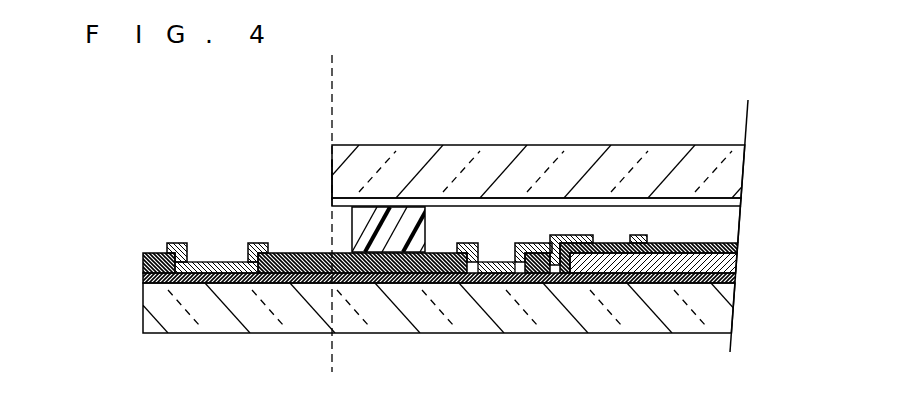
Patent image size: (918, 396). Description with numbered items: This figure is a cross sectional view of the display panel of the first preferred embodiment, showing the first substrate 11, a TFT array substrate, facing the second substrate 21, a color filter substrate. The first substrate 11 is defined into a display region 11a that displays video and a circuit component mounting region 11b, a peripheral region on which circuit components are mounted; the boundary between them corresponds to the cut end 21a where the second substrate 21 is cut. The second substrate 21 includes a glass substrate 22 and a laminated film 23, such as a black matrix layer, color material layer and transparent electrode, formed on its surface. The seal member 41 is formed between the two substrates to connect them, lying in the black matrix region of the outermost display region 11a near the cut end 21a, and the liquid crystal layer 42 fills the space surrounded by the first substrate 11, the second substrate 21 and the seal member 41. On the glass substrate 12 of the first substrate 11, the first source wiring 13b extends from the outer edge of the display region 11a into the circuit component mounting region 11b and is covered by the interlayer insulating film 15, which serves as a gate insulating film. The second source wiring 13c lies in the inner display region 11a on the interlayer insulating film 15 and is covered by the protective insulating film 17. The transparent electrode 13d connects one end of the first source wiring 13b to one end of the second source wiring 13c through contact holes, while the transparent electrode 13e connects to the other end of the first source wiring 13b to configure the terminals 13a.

The first substrate 11 is at (443, 279).
The display region 11a is at (332, 137).
The circuit component mounting region 11b is at (143, 137).
The glass substrate 12 is at (735, 316).
The terminals 13a is at (175, 246).
The first source wiring 13b is at (143, 278).
The second source wiring 13c is at (745, 263).
The transparent electrode 13d is at (647, 237).
The transparent electrode 13e is at (167, 244).
The interlayer insulating film 15 is at (745, 280).
The protective insulating film 17 is at (745, 247).
The second substrate 21 is at (577, 175).
The cut end 21a is at (332, 183).
The glass substrate 22 is at (735, 170).
The laminated film 23 is at (737, 200).
The seal member 41 is at (352, 231).
The liquid crystal layer 42 is at (738, 224).